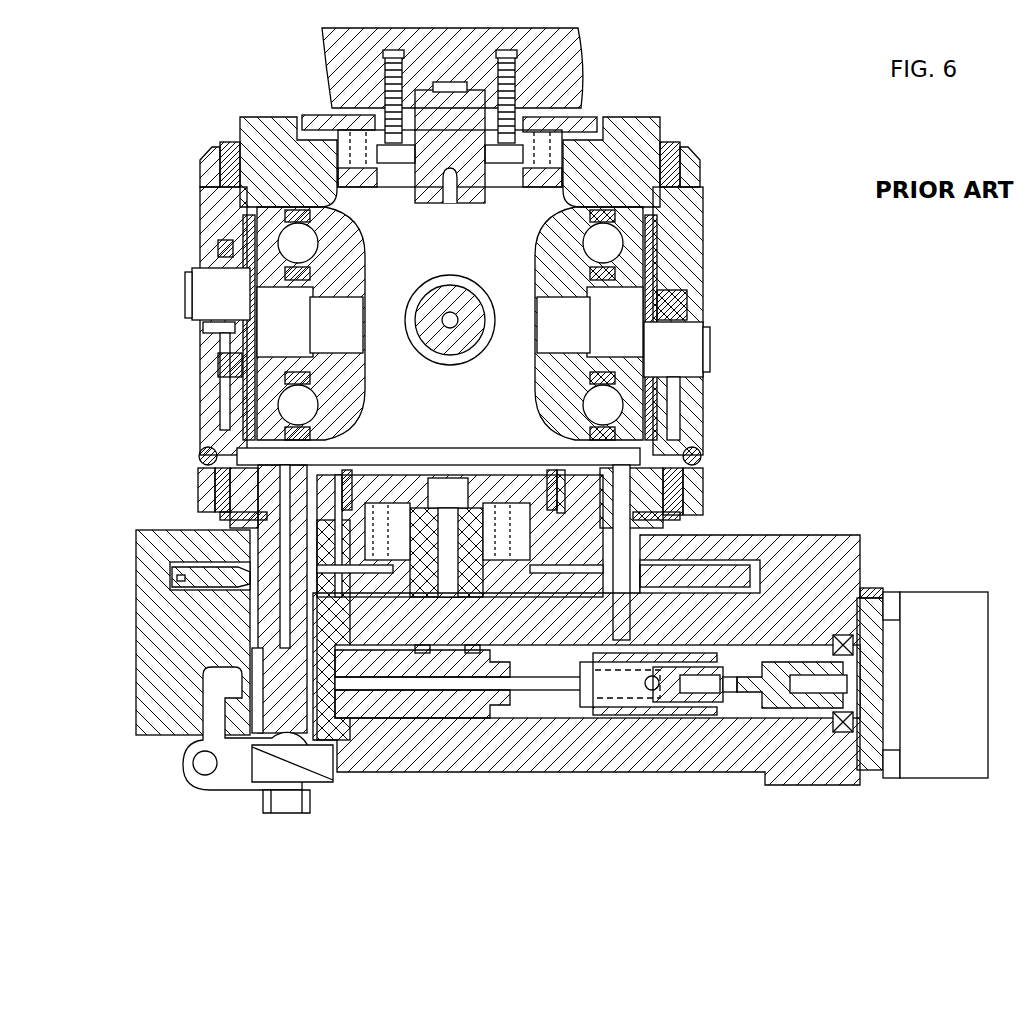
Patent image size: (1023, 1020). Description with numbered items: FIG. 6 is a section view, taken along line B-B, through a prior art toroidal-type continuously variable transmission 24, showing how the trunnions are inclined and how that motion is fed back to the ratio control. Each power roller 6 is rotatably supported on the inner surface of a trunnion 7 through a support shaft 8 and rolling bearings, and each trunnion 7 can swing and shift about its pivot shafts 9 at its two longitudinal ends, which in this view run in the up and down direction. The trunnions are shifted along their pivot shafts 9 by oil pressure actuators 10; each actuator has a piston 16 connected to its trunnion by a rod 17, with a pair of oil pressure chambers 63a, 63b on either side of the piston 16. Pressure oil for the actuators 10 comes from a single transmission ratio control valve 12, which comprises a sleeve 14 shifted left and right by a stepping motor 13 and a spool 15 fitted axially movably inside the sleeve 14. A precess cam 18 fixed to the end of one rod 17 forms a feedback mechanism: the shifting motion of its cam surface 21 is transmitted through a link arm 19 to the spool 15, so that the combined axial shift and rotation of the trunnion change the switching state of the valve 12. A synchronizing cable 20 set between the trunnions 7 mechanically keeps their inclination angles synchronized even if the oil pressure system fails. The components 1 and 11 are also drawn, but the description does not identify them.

The rotary shaft 1 is at (438, 292).
The power roller 6 is at (343, 226).
The trunnion 7 is at (690, 256).
The support shaft 8 is at (215, 304).
The pivot shaft 9 is at (276, 140).
The actuator 10 is at (265, 565).
The plate 11 is at (534, 178).
The transmission ratio control valve 12 is at (615, 752).
The stepping motor 13 is at (935, 606).
The sleeve 14 is at (686, 642).
The spool 15 is at (525, 700).
The piston 16 is at (353, 575).
The rod 17 is at (553, 490).
The precess cam 18 is at (332, 775).
The link arm 19 is at (185, 765).
The synchronizing cable 20 is at (435, 447).
The cam surface 21 is at (308, 794).
The toroidal-type continuously variable transmission 24 is at (740, 166).
The oil pressure chamber 63a is at (232, 540).
The oil pressure chamber 63b is at (280, 605).